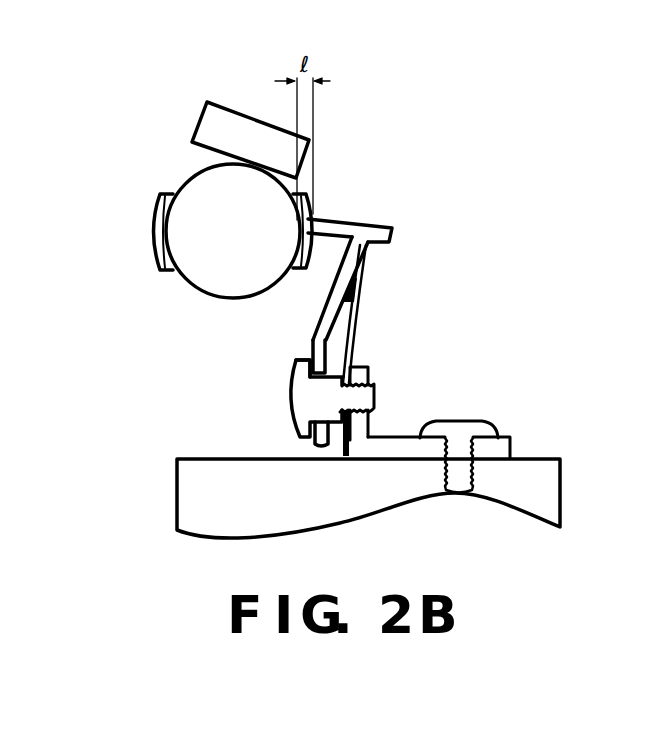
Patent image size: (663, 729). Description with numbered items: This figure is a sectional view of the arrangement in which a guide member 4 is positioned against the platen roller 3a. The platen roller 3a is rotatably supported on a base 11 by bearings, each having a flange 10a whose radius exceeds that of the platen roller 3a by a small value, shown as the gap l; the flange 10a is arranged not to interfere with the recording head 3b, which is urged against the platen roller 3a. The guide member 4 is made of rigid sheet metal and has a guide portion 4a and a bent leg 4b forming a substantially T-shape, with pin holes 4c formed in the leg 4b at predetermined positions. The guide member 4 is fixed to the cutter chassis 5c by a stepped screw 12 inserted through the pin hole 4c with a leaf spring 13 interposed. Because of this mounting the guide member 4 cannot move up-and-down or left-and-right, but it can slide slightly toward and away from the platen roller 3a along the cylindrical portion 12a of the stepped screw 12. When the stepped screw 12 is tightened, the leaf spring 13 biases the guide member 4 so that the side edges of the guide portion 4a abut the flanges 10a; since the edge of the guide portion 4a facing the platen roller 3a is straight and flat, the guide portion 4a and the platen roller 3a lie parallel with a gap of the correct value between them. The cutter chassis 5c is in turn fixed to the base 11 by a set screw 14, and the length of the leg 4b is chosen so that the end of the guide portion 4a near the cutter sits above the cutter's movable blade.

The platen roller 3a is at (203, 268).
The recording head 3b is at (210, 130).
The guide member 4 is at (383, 299).
The guide portion 4a is at (335, 217).
The bent leg 4b is at (358, 258).
The pin holes 4c is at (335, 358).
The cutter chassis 5c is at (357, 423).
The flange 10a is at (152, 226).
The base 11 is at (190, 487).
The stepped screw 12 is at (302, 400).
The cylindrical portion 12a is at (300, 383).
The leaf spring 13 is at (352, 300).
The set screw 14 is at (467, 424).